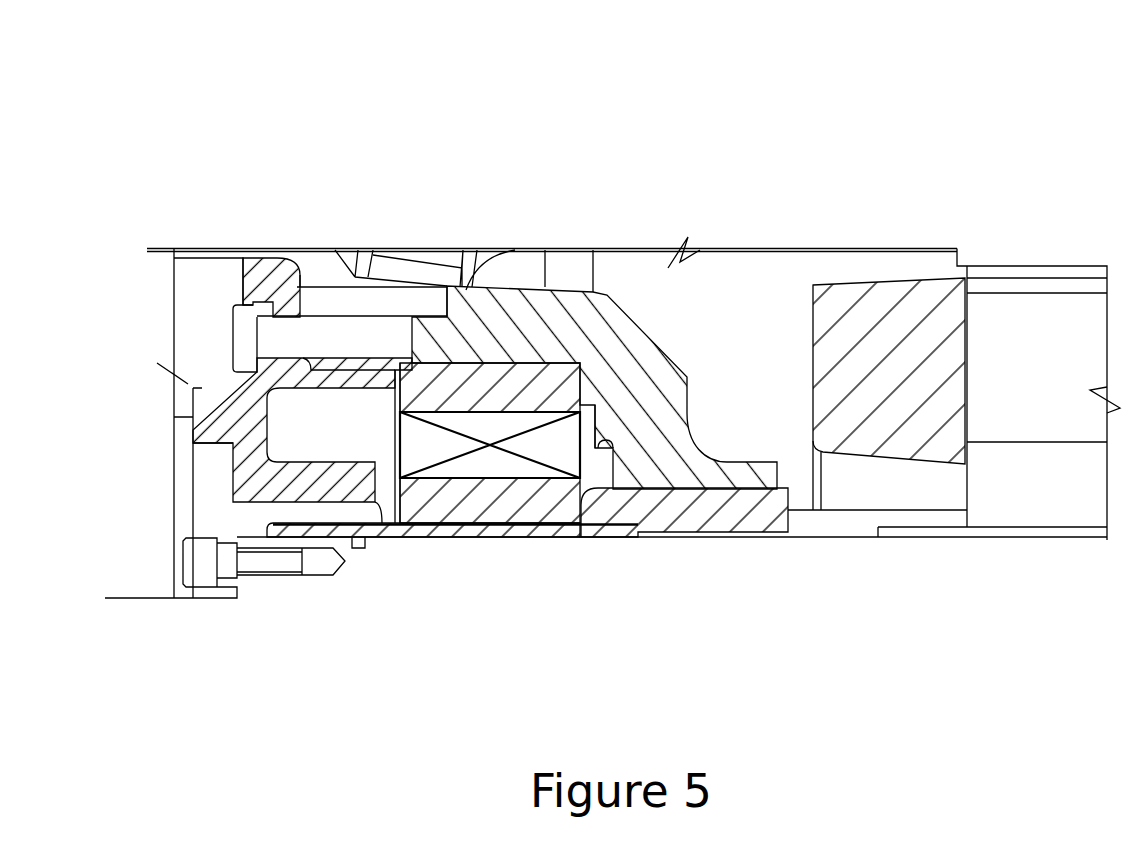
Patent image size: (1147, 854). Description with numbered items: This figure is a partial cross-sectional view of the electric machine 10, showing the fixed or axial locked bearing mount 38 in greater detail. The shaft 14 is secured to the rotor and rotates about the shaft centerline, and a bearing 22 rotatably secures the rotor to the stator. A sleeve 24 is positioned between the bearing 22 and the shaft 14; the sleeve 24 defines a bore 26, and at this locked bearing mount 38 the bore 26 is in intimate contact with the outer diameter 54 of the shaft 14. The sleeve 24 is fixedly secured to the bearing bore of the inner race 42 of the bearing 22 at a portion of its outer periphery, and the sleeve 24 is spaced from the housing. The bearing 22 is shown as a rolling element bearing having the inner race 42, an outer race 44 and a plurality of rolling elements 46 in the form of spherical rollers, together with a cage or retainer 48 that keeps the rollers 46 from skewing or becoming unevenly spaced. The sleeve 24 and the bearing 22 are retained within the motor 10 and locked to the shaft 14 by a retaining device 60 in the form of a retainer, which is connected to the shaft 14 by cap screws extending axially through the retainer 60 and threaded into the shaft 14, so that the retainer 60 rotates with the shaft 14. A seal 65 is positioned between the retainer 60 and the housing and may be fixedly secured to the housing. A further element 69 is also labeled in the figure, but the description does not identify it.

The electric machine 10 is at (1040, 172).
The shaft 14 is at (857, 538).
The bearing 22 is at (586, 362).
The sleeve 24 is at (773, 530).
The bore 26 is at (417, 548).
The fixed or axial locked bearing mount 38 is at (965, 199).
The inner race 42 is at (550, 517).
The outer race 44 is at (518, 375).
The rolling elements 46 is at (512, 447).
The cage or retainer 48 is at (583, 427).
The outer diameter 54 is at (832, 537).
The retaining device 60 is at (201, 526).
The seal 65 is at (202, 386).
The cavity 69 is at (210, 473).